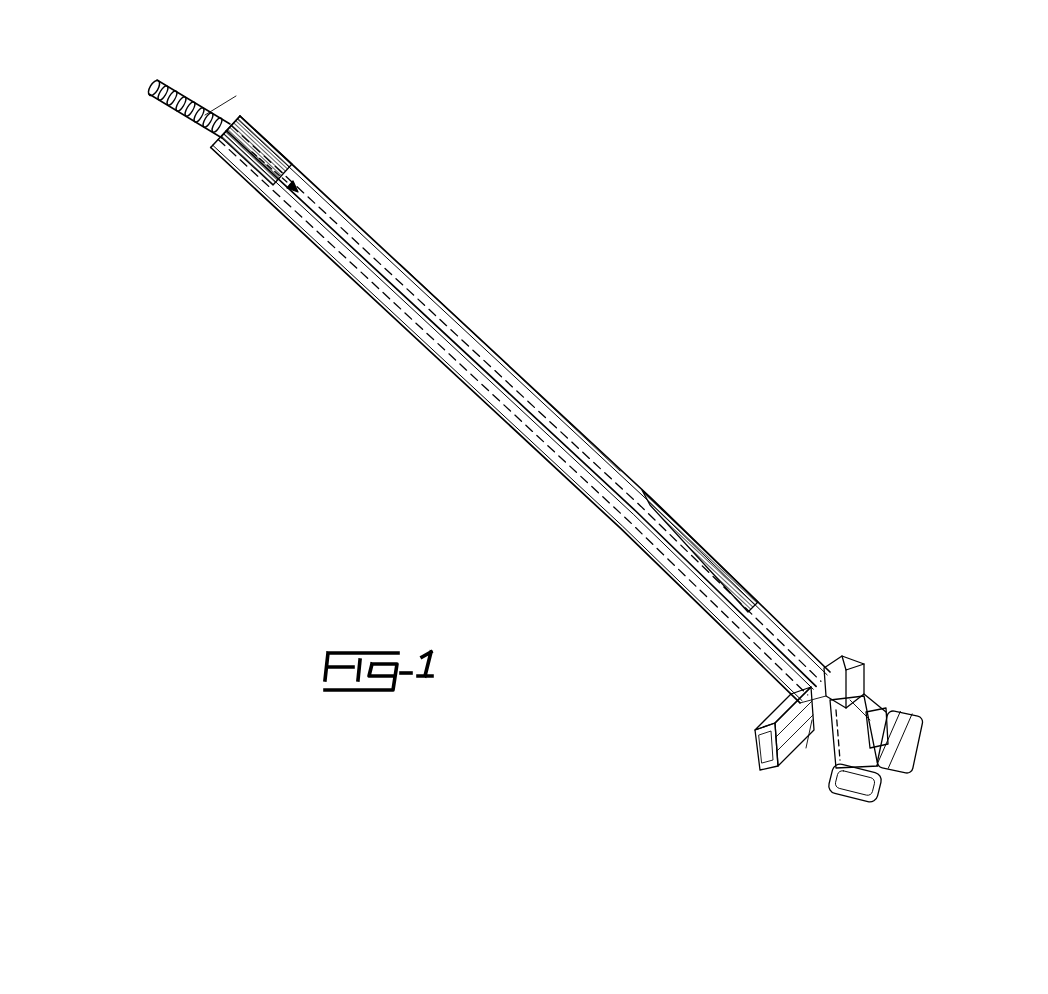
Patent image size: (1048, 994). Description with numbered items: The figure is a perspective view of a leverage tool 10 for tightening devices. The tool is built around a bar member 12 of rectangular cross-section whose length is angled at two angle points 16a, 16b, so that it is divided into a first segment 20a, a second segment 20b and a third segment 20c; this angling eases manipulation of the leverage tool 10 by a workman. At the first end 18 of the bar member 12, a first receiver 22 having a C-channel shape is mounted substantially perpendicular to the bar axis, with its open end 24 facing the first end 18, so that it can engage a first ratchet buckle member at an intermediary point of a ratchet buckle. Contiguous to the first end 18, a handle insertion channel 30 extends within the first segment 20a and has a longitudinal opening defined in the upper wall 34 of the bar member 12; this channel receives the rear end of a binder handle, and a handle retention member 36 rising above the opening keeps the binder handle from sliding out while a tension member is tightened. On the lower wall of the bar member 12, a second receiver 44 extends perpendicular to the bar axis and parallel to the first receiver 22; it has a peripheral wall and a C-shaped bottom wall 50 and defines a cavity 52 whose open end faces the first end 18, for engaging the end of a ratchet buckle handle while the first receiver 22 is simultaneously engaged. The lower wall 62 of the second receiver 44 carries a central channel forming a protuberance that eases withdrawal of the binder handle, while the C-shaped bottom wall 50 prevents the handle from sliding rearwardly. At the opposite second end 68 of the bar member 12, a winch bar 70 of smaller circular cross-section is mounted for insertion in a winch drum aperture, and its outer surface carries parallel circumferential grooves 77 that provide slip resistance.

The leverage tool 10 is at (430, 224).
The bar member 12 is at (481, 333).
The angle point 16a is at (795, 693).
The angle point 16b is at (707, 547).
The first end 18 is at (885, 722).
The first segment 20a is at (834, 741).
The second segment 20b is at (770, 628).
The third segment 20c is at (303, 183).
The first receiver 22 is at (908, 714).
The open end 24 is at (885, 795).
The handle insertion channel 30 is at (866, 708).
The upper wall 34 is at (613, 468).
The handle retention member 36 is at (837, 670).
The second receiver 44 is at (753, 748).
The C-shaped bottom wall 50 is at (757, 733).
The cavity 52 is at (782, 766).
The lower wall 62 is at (808, 746).
The second end 68 is at (241, 118).
The winch bar 70 is at (173, 81).
The circumferential grooves 77 is at (203, 104).